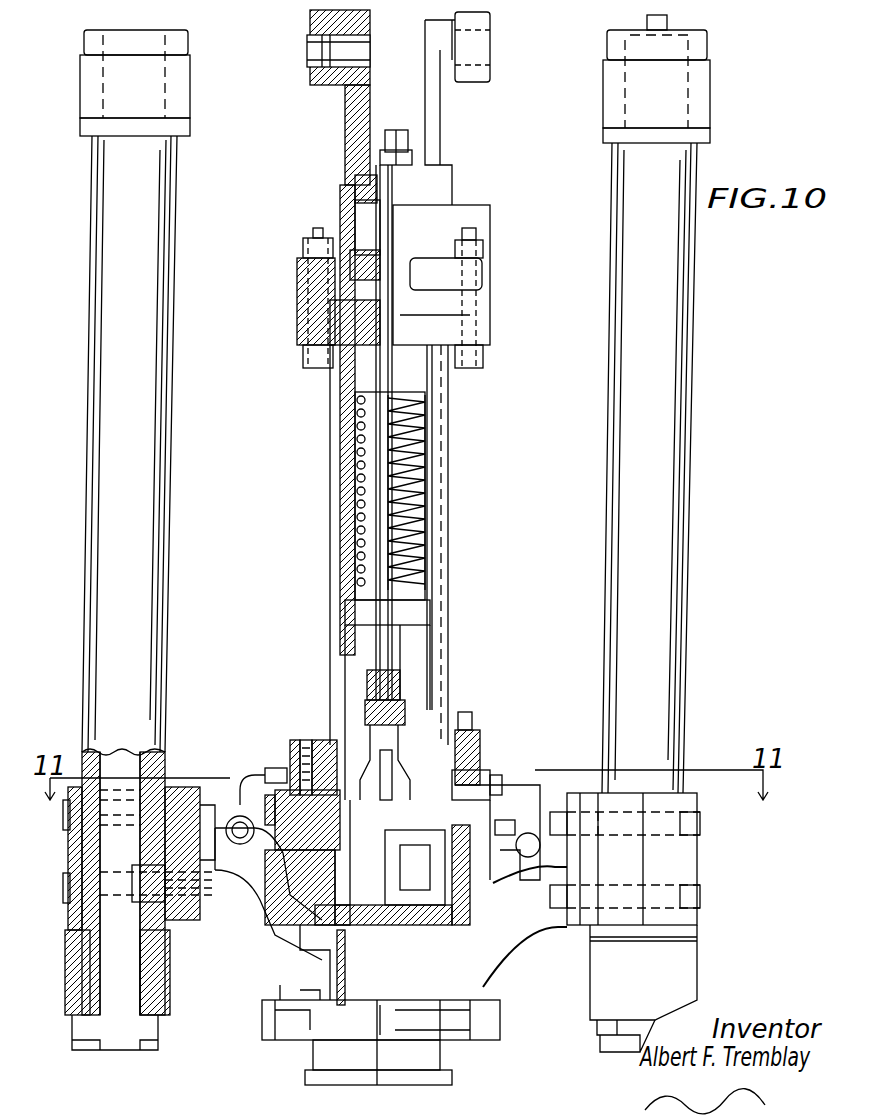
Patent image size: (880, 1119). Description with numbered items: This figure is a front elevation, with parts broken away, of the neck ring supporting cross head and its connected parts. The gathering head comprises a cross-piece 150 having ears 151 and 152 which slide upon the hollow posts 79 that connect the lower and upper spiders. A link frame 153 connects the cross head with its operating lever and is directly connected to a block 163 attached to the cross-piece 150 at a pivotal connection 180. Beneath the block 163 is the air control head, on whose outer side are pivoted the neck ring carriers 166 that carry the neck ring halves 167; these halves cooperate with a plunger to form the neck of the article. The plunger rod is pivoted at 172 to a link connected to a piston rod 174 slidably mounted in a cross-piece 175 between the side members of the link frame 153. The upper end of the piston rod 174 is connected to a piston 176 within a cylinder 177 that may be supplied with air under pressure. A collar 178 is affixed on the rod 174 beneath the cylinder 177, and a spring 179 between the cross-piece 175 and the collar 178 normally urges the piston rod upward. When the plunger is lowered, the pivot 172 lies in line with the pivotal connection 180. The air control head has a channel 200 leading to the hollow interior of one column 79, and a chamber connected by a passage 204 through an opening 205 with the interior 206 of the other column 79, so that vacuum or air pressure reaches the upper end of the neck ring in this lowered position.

The posts 79 is at (163, 620).
The cross-piece 150 is at (518, 940).
The ear 151 is at (663, 855).
The ear 152 is at (75, 855).
The link frame 153 is at (448, 504).
The block 163 is at (455, 792).
The neck ring carriers 166 is at (288, 1043).
The neck ring halves 167 is at (320, 1080).
The pivot 172 is at (405, 785).
The piston rod 174 is at (385, 650).
The cross-piece 175 is at (417, 608).
The piston 176 is at (340, 228).
The cylinder 177 is at (348, 190).
The collar 178 is at (362, 410).
The spring 179 is at (360, 478).
The pivotal connection 180 is at (270, 775).
The channel 200 is at (330, 955).
The passage 204 is at (248, 935).
The opening 205 is at (140, 902).
The interior 206 is at (120, 760).